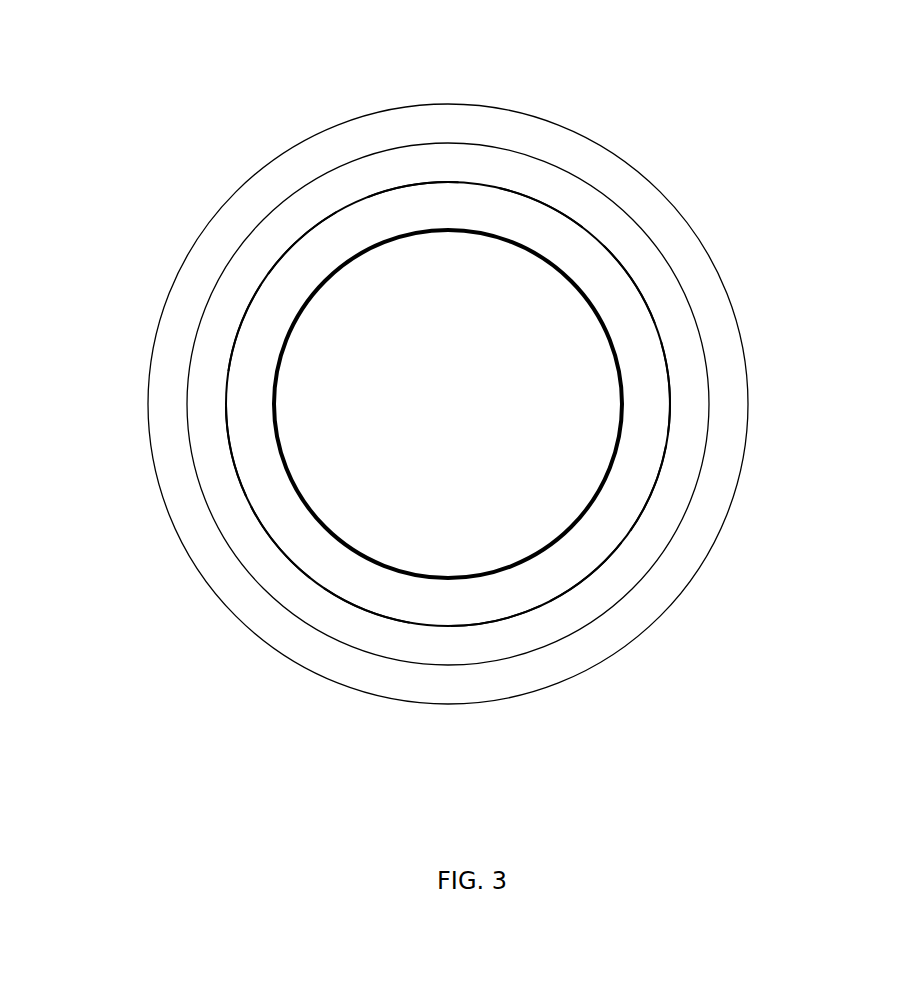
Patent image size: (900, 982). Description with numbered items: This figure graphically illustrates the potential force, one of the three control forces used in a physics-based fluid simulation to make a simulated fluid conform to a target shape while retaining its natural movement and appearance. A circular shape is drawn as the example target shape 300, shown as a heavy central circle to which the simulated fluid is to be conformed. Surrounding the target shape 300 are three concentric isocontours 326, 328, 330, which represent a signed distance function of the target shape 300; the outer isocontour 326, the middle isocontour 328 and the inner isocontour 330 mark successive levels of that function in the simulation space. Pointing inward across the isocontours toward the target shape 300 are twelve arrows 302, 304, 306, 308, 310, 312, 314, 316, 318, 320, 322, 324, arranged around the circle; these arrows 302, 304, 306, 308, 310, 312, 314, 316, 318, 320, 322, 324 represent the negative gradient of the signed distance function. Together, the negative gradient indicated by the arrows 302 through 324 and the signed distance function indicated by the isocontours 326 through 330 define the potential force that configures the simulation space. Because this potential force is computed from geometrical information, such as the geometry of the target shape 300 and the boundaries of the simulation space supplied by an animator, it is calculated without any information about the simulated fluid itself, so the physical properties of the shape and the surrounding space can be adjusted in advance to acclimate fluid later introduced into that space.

The target shape 300 is at (477, 391).
The arrow 302 is at (412, 184).
The arrow 304 is at (543, 203).
The arrow 306 is at (633, 282).
The arrow 308 is at (668, 388).
The arrow 310 is at (653, 490).
The arrow 312 is at (593, 581).
The arrow 314 is at (498, 625).
The arrow 316 is at (363, 615).
The arrow 318 is at (275, 547).
The arrow 320 is at (242, 450).
The arrow 322 is at (242, 327).
The arrow 324 is at (297, 237).
The isocontour 326 is at (621, 155).
The isocontour 328 is at (619, 198).
The isocontour 330 is at (597, 243).